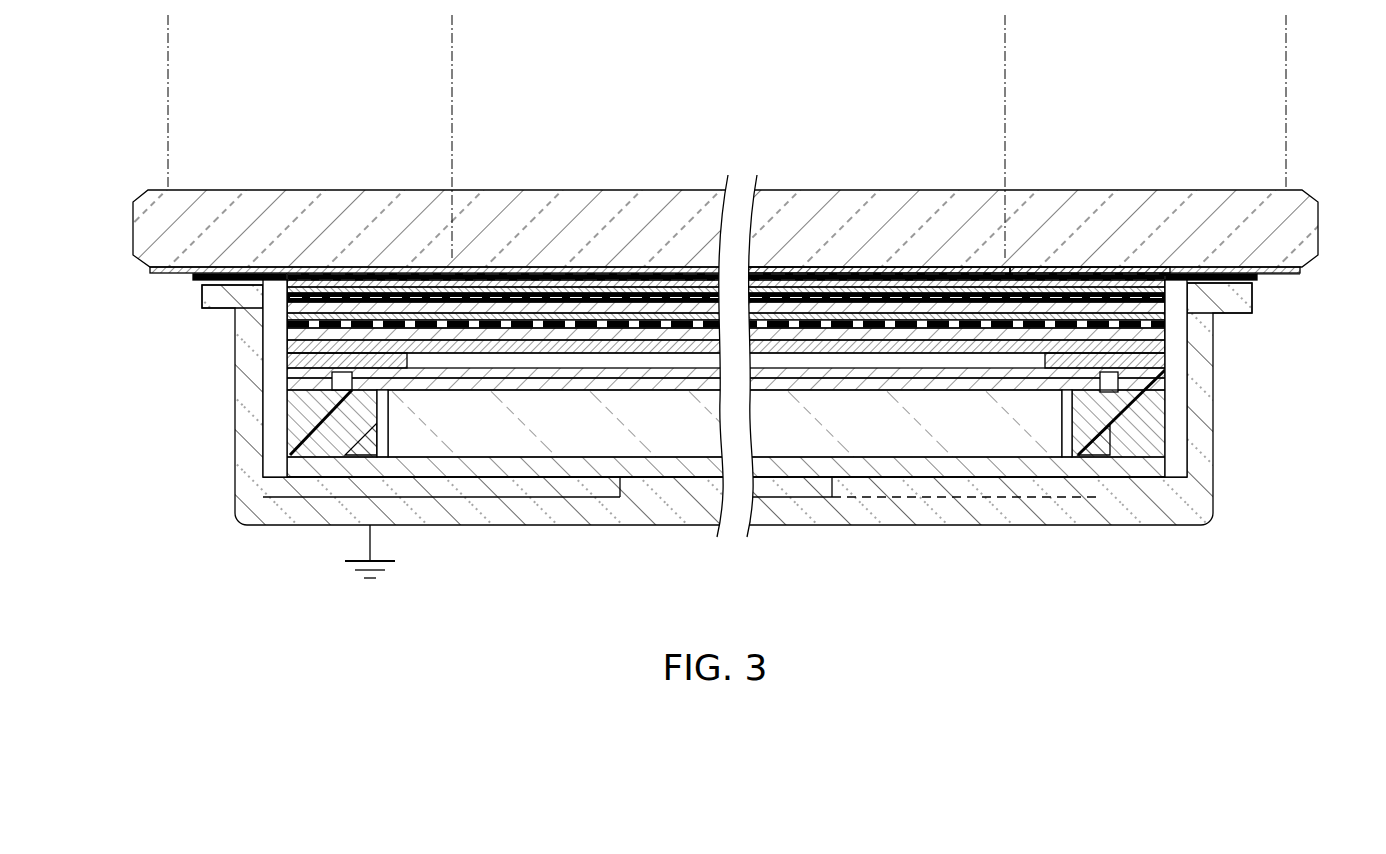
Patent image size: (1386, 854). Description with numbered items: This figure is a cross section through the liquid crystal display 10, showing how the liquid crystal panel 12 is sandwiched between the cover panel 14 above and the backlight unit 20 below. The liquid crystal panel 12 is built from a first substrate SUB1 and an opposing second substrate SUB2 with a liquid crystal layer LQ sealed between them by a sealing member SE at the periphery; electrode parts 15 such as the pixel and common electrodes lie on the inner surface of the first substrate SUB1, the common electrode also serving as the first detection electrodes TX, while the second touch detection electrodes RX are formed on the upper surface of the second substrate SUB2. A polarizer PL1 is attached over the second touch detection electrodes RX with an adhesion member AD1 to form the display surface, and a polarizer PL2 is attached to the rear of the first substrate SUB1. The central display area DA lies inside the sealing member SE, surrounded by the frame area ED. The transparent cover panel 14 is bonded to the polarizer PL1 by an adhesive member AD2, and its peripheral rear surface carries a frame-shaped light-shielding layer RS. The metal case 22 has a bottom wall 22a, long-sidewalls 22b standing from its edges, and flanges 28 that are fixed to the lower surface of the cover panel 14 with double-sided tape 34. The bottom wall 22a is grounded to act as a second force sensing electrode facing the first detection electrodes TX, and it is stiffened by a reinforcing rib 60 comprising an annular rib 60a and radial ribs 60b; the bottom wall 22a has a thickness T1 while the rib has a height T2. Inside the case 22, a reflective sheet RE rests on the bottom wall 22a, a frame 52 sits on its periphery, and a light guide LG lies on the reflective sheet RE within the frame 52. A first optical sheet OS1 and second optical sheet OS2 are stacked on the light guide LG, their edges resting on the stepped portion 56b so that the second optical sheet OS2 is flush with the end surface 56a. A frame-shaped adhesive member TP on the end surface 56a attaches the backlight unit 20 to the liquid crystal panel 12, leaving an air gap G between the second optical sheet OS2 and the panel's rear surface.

The liquid crystal display 10 is at (1234, 176).
The liquid crystal panel 12 is at (726, 207).
The cover panel 14 is at (218, 206).
The electrode parts 15 is at (935, 290).
The backlight unit 20 is at (718, 469).
The case 22 is at (722, 455).
The bottom wall 22a is at (683, 505).
The long-sidewalls 22b is at (248, 410).
The flanges 28 is at (205, 297).
The double-sided tape 34 is at (192, 278).
The frame 52 is at (273, 440).
The end surface 56a is at (1150, 392).
The stepped portion 56b is at (1120, 441).
The reinforcing rib 60 is at (681, 552).
The annular rib 60a is at (808, 530).
The radial ribs 60b is at (318, 490).
The sealing member SE is at (360, 268).
The light-shielding layer RS is at (1303, 274).
The second touch detection electrodes RX is at (497, 275).
The first detection electrodes TX is at (835, 320).
The polarizer PL1 is at (520, 283).
The polarizer PL2 is at (640, 355).
The first substrate SUB1 is at (616, 328).
The second substrate SUB2 is at (555, 290).
The liquid crystal layer LQ is at (585, 307).
The adhesion member AD1 is at (1068, 268).
The adhesive member AD2 is at (821, 268).
The adhesive member TP is at (290, 360).
The first optical sheet OS1 is at (300, 384).
The second optical sheet OS2 is at (290, 372).
The light guide LG is at (463, 440).
The reflective sheet RE is at (990, 465).
The gap G is at (792, 455).
The thickness T1 is at (558, 455).
The height T2 is at (508, 435).
The frame area ED is at (176, 40).
The display area DA is at (460, 40).